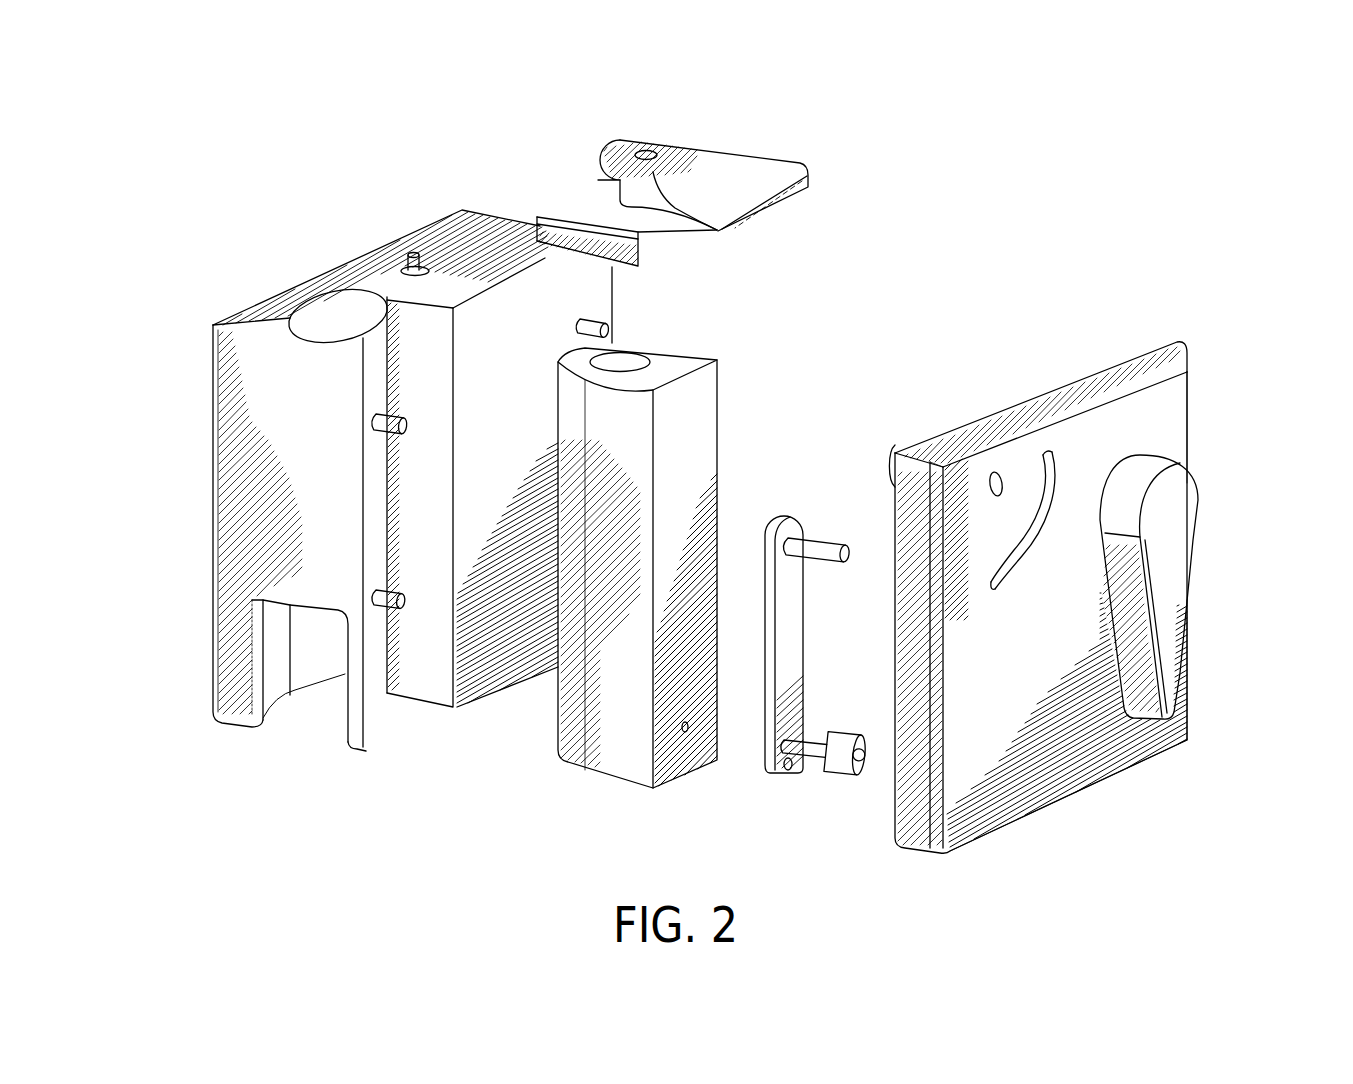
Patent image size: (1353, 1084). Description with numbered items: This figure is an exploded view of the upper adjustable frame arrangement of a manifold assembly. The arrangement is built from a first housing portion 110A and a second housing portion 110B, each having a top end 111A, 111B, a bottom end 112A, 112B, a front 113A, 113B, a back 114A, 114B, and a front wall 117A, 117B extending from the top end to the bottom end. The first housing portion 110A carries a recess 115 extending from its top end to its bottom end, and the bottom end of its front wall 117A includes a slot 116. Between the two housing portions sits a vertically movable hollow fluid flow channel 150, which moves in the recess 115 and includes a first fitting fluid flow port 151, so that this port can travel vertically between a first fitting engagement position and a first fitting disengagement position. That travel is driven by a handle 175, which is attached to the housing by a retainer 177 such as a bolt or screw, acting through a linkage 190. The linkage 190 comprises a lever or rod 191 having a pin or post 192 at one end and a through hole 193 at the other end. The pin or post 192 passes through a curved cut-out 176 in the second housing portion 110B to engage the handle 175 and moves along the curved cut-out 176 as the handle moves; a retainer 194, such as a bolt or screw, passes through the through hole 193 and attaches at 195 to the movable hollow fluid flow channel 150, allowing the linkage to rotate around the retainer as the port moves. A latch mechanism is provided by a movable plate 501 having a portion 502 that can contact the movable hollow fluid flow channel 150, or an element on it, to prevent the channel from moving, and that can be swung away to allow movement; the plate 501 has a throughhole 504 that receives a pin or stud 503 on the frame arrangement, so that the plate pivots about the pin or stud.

The first housing portion 110A is at (230, 520).
The top end 111A is at (260, 318).
The bottom end 112A is at (230, 725).
The front 113A is at (260, 392).
The back 114A is at (502, 215).
The recess 115 is at (343, 313).
The slot 116 is at (320, 713).
The front wall 117A is at (277, 552).
The movable hollow fluid flow channel 150 is at (620, 727).
The first fitting fluid flow port 151 is at (625, 363).
The retainer attachment point 195 is at (685, 730).
The movable plate 501 is at (748, 167).
The portion of movable plate 502 is at (720, 230).
The pin or stud 503 is at (413, 255).
The throughhole 504 is at (647, 155).
The linkage 190 is at (790, 495).
The lever or rod 191 is at (788, 623).
The pin or post 192 is at (817, 542).
The through hole 193 is at (788, 766).
The retainer 194 is at (825, 752).
The second housing portion 110B is at (1050, 773).
The top end 111B is at (1148, 347).
The bottom end 112B is at (985, 835).
The front 113B is at (905, 800).
The back 114B is at (1187, 390).
The front wall 117B is at (913, 610).
The handle 175 is at (1172, 556).
The curved cut-out 176 is at (1043, 457).
The retainer 177 is at (897, 450).